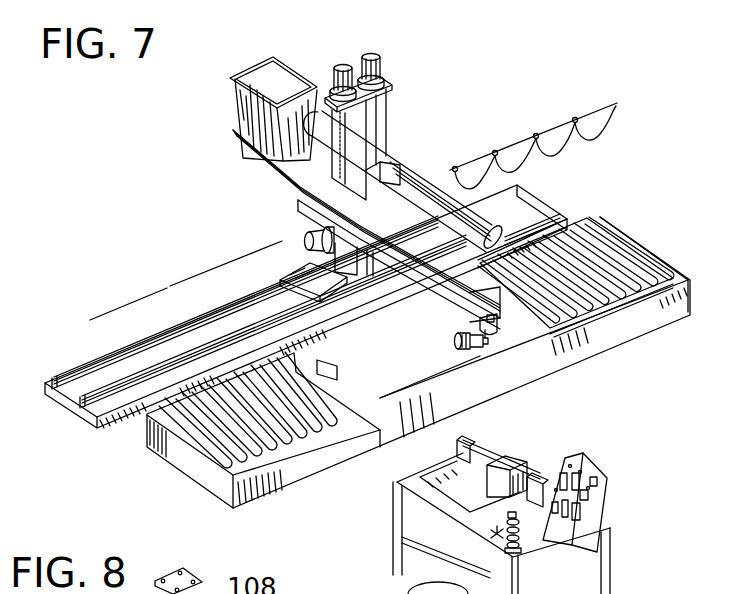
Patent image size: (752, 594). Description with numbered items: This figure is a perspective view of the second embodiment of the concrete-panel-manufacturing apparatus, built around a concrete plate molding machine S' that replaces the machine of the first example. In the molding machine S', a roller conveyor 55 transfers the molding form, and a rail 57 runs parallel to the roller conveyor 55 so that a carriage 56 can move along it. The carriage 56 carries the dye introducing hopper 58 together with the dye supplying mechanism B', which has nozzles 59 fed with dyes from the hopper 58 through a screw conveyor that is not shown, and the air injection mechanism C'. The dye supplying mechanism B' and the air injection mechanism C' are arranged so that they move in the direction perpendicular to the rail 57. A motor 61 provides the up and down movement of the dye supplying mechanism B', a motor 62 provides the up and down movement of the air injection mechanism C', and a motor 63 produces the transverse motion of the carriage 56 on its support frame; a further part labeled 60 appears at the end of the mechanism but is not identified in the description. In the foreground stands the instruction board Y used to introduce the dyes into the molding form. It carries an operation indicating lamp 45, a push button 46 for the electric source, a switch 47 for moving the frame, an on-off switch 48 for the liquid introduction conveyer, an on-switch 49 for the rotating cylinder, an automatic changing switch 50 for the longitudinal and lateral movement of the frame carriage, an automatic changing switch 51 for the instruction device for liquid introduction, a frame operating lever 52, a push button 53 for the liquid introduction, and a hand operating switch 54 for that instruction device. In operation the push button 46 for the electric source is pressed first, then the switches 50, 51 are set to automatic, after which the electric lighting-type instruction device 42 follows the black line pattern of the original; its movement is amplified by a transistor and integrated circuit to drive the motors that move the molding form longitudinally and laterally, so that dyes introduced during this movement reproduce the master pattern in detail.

The electric lighting-type instruction device 42 is at (509, 460).
The operation indicating lamp 45 is at (597, 470).
The push button for the electric source 46 is at (592, 491).
The switch for moving the frame 47 is at (589, 508).
The on-off switch for the liquid introduction conveyer 48 is at (567, 458).
The on-switch for the rotating cylinder 49 is at (558, 478).
The automatic changing switch for longitudinal and lateral movement of the frame car 50 is at (547, 522).
The automatic changing switch for the instruction device for liquid introduction 51 is at (571, 518).
The frame operating lever 52 is at (526, 542).
The push button for the liquid introduction 53 is at (506, 515).
The hand operating switch for the instruction device for liquid introduction 54 is at (578, 530).
The roller conveyor 55 is at (272, 482).
The carriage 56 is at (380, 116).
The rail 57 is at (153, 382).
The dye introducing hopper 58 is at (262, 76).
The nozzles 59 is at (493, 346).
The carriage end block 60 is at (476, 268).
The motor for up and down movement of the dye supplying mechanism 61 is at (343, 67).
The motor for up and down movement of the air injection mechanism 62 is at (373, 57).
The motor for the transverse motion of the carriage 63 is at (306, 246).
The dye supplying mechanism B' is at (366, 229).
The air injection mechanism C' is at (411, 181).
The concrete plate molding machine S' is at (353, 211).
The instruction board Y is at (442, 455).